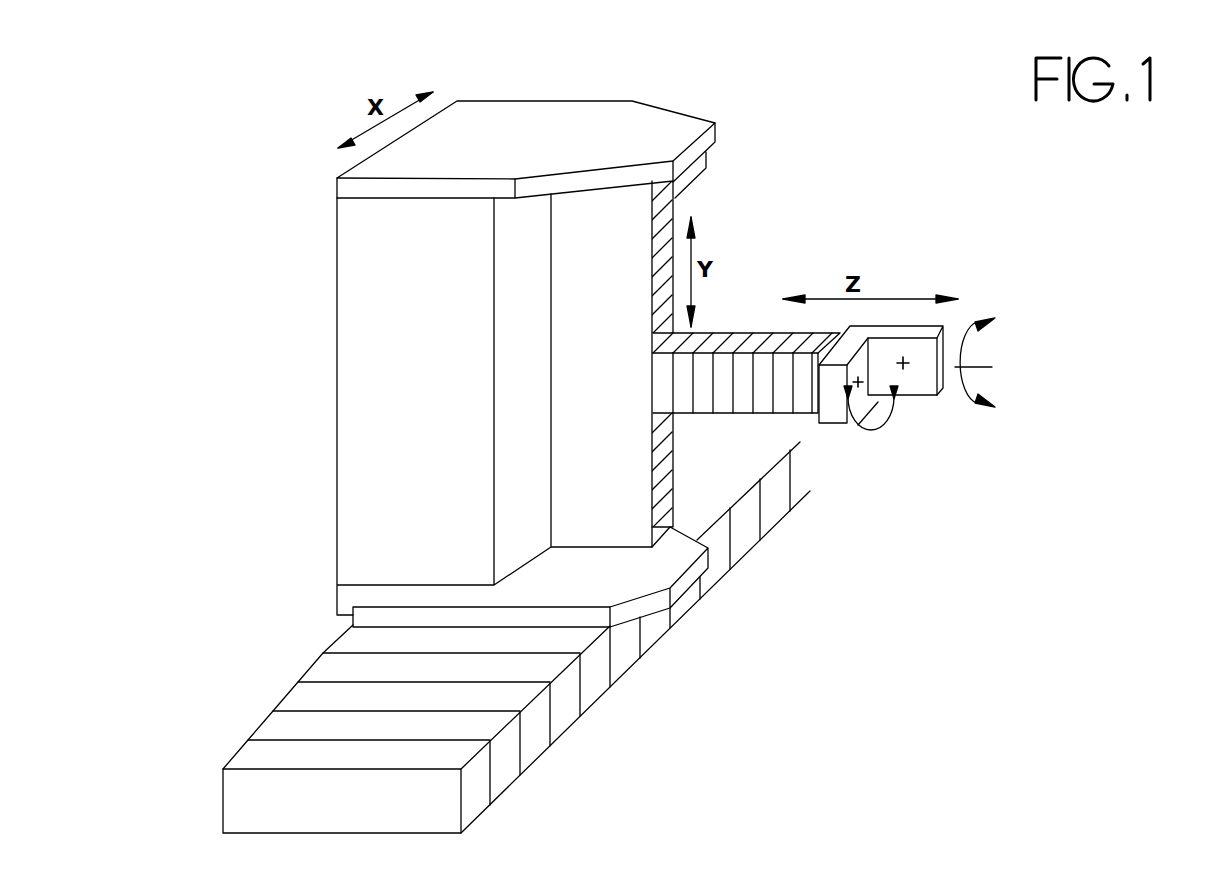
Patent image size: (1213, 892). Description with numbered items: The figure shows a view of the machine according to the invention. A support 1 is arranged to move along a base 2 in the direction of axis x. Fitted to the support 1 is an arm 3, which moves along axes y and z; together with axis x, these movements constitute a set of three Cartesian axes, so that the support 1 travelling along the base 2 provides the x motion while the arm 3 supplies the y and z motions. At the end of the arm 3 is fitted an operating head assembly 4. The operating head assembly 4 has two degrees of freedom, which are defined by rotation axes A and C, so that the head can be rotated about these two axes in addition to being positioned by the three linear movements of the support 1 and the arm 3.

The support 1 is at (402, 303).
The base 2 is at (342, 703).
The arm 3 is at (752, 390).
The operating head assembly 4 is at (937, 411).